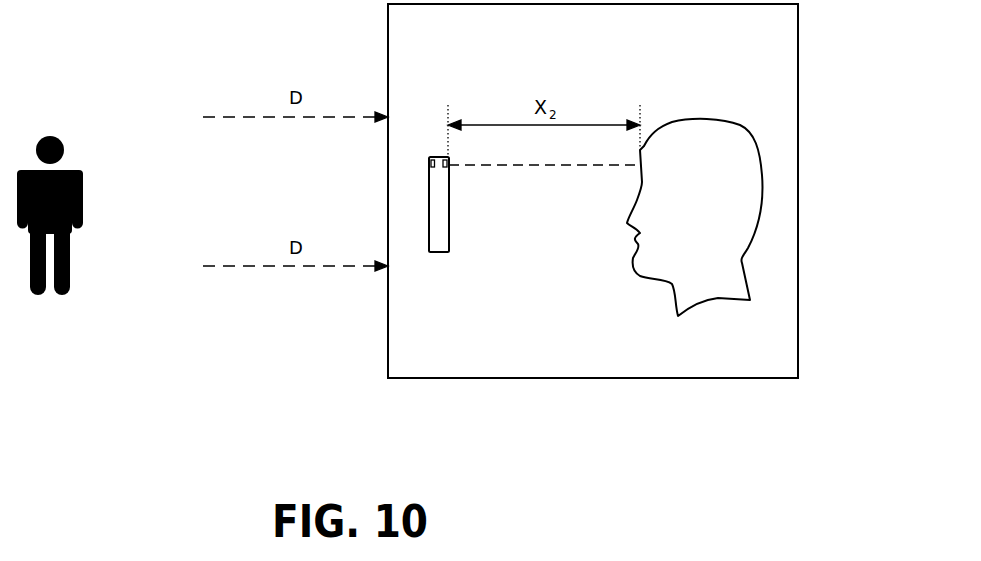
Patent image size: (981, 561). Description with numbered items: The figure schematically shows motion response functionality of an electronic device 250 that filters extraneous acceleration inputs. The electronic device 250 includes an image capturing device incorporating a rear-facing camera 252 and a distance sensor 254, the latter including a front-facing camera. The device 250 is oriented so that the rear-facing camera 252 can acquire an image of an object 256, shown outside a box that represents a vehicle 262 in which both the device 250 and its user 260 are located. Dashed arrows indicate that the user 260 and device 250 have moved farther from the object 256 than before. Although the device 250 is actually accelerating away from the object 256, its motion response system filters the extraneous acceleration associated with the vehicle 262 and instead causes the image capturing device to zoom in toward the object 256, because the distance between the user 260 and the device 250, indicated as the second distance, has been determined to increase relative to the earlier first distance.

The electronic device 250 is at (470, 276).
The rear-facing camera 252 is at (430, 165).
The distance sensor 254 is at (452, 165).
The object 256 is at (77, 170).
The user 260 is at (700, 120).
The vehicle 262 is at (798, 358).